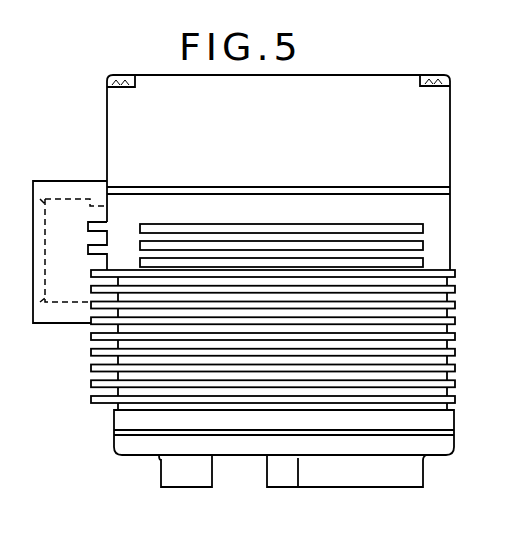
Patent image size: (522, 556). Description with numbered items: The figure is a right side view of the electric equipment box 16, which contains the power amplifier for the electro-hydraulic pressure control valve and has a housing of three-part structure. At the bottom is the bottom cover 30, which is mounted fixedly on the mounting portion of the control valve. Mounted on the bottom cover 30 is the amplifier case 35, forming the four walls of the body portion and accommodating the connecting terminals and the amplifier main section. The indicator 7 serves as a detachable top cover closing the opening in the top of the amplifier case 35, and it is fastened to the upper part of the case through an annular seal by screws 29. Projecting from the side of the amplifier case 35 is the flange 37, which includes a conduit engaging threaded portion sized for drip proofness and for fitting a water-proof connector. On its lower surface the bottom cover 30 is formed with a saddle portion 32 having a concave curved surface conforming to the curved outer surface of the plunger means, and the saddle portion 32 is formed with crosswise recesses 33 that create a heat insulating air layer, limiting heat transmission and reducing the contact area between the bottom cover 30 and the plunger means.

The indicator 7 is at (368, 82).
The screws 29 is at (126, 78).
The flange 37 is at (63, 188).
The electric equipment box 16 is at (91, 353).
The amplifier case 35 is at (101, 397).
The bottom cover 30 is at (128, 448).
The saddle portion 32 is at (173, 481).
The crosswise recesses 33 is at (242, 459).